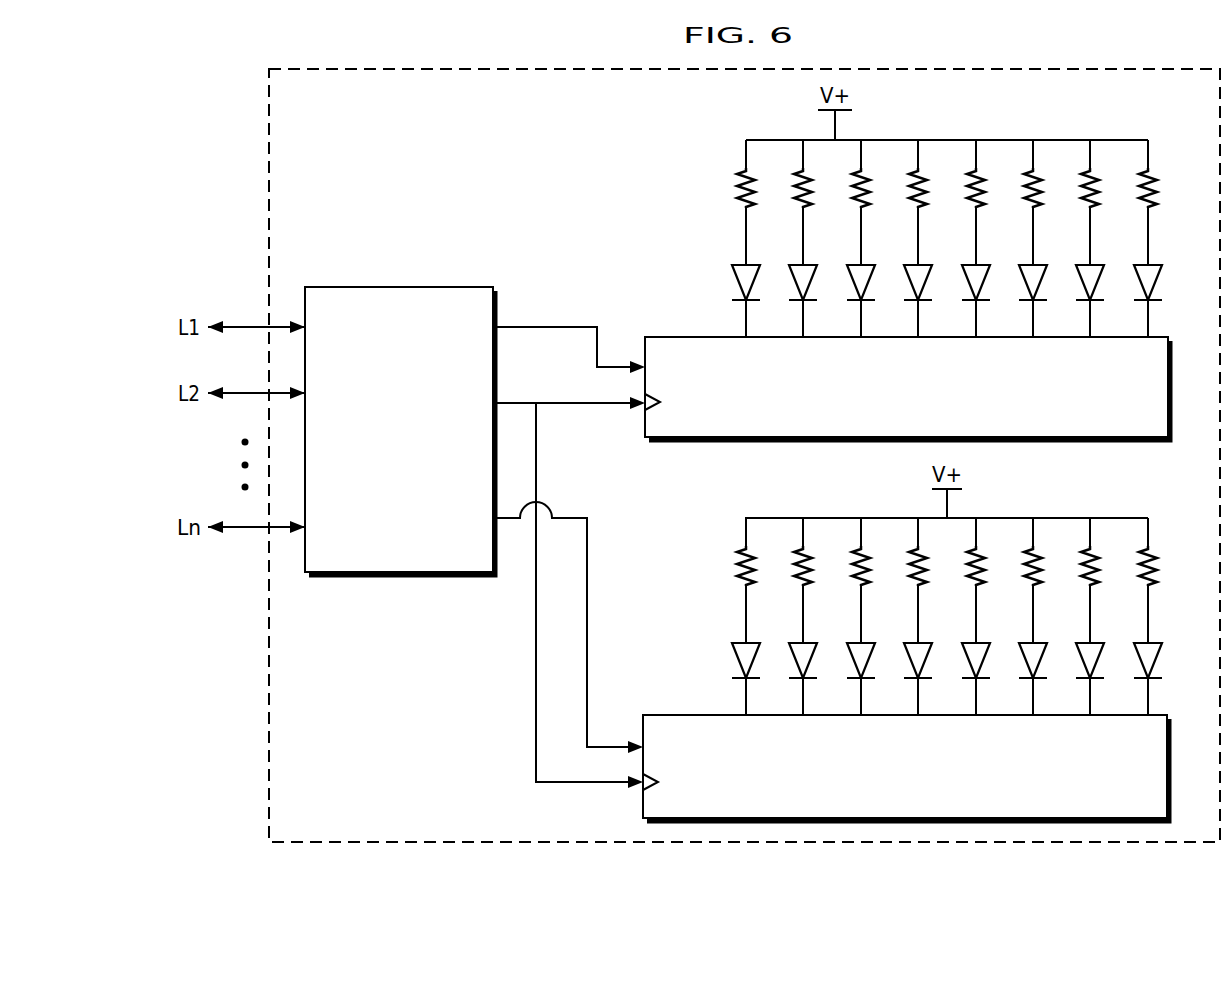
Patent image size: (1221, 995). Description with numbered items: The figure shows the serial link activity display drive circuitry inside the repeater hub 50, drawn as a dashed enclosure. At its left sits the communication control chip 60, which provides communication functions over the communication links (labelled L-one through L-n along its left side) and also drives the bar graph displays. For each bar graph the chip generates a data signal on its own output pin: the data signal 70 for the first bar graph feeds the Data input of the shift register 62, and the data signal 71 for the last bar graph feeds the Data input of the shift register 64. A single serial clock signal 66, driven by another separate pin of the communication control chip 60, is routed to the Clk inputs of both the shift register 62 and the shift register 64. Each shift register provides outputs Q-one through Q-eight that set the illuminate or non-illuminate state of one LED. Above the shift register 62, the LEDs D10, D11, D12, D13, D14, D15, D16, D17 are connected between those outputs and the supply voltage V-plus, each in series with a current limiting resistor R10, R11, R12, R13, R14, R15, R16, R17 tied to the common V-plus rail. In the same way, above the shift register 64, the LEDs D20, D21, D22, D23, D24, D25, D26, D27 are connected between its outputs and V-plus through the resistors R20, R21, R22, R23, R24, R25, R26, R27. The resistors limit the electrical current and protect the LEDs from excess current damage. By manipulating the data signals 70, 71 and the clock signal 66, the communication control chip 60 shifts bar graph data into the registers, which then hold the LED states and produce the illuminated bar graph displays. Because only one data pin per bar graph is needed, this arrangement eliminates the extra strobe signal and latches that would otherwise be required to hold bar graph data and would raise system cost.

The repeater hub 50 is at (328, 121).
The communication control chip 60 is at (387, 456).
The shift register 62 is at (1016, 419).
The shift register 64 is at (1016, 799).
The serial clock signal 66 is at (560, 399).
The data signal 70 is at (546, 324).
The data signal 71 is at (571, 515).
The current limiting resistor R10 is at (762, 175).
The current limiting resistor R11 is at (819, 175).
The current limiting resistor R12 is at (877, 175).
The current limiting resistor R13 is at (934, 175).
The current limiting resistor R14 is at (992, 175).
The current limiting resistor R15 is at (1049, 175).
The current limiting resistor R16 is at (1106, 175).
The current limiting resistor R17 is at (1164, 175).
The current limiting resistor R20 is at (762, 553).
The current limiting resistor R21 is at (819, 553).
The current limiting resistor R22 is at (877, 553).
The current limiting resistor R23 is at (934, 553).
The current limiting resistor R24 is at (992, 553).
The current limiting resistor R25 is at (1049, 553).
The current limiting resistor R26 is at (1106, 553).
The current limiting resistor R27 is at (1164, 553).
The bar graph LED D10 is at (759, 268).
The bar graph LED D11 is at (816, 268).
The bar graph LED D12 is at (874, 268).
The bar graph LED D13 is at (931, 268).
The bar graph LED D14 is at (989, 268).
The bar graph LED D15 is at (1046, 268).
The bar graph LED D16 is at (1103, 268).
The bar graph LED D17 is at (1161, 268).
The bar graph LED D20 is at (759, 646).
The bar graph LED D21 is at (816, 646).
The bar graph LED D22 is at (874, 646).
The bar graph LED D23 is at (931, 646).
The bar graph LED D24 is at (989, 646).
The bar graph LED D25 is at (1046, 646).
The bar graph LED D26 is at (1103, 646).
The bar graph LED D27 is at (1161, 646).